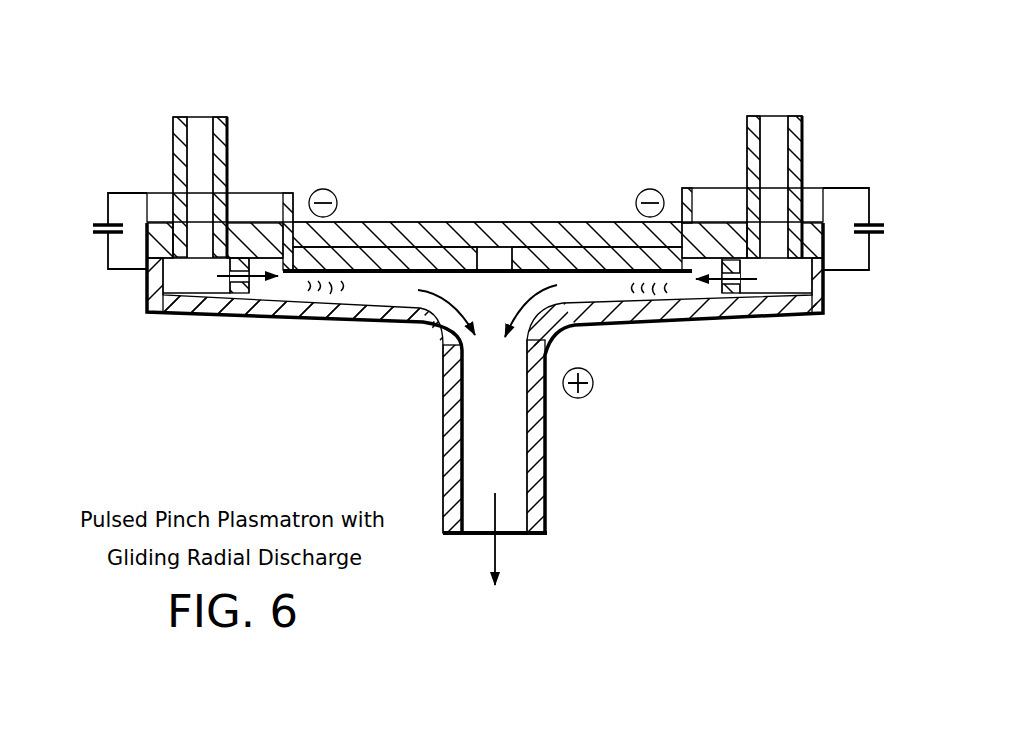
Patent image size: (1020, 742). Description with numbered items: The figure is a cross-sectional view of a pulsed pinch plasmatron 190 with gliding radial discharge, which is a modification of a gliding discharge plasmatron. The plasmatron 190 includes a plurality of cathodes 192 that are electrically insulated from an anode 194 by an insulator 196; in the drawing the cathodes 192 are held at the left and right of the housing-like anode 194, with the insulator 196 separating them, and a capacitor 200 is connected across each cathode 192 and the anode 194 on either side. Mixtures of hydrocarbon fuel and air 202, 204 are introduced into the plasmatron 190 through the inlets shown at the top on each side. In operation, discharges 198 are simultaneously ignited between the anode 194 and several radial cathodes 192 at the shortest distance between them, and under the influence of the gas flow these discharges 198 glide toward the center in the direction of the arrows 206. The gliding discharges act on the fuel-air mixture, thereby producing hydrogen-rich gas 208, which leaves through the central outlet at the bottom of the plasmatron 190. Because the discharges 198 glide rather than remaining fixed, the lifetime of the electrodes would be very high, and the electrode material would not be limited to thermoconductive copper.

The plasmatron 190 is at (510, 63).
The cathodes 192 is at (505, 222).
The anode 194 is at (404, 324).
The insulator 196 is at (152, 212).
The discharges 198 is at (332, 303).
The capacitor 200 is at (100, 222).
The mixture of hydrocarbon fuel and air 202 is at (199, 62).
The mixture of hydrocarbon fuel and air 204 is at (775, 63).
The arrows 206 is at (512, 320).
The hydrogen-rich gas 208 is at (497, 553).